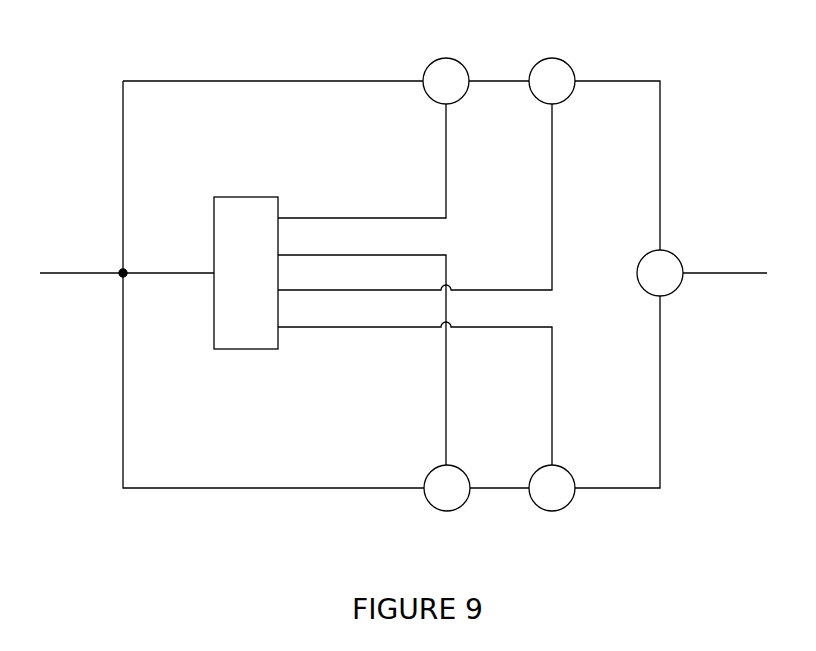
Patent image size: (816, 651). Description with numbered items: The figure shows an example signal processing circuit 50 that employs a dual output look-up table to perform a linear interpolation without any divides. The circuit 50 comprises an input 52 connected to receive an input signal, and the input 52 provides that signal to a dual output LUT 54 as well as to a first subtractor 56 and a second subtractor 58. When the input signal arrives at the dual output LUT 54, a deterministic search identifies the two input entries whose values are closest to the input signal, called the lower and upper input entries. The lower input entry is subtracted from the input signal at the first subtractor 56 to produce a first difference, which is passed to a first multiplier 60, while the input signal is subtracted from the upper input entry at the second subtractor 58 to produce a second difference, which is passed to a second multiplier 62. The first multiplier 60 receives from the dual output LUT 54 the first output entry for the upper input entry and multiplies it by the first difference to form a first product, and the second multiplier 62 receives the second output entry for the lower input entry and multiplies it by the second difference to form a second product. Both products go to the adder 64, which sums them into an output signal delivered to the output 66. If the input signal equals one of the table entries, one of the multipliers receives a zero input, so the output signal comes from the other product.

The signal processing circuit 50 is at (710, 55).
The input 52 is at (76, 273).
The dual output LUT 54 is at (246, 197).
The first subtractor 56 is at (446, 58).
The second subtractor 58 is at (446, 511).
The first multiplier 60 is at (551, 58).
The second multiplier 62 is at (552, 511).
The adder 64 is at (638, 270).
The output 66 is at (730, 273).